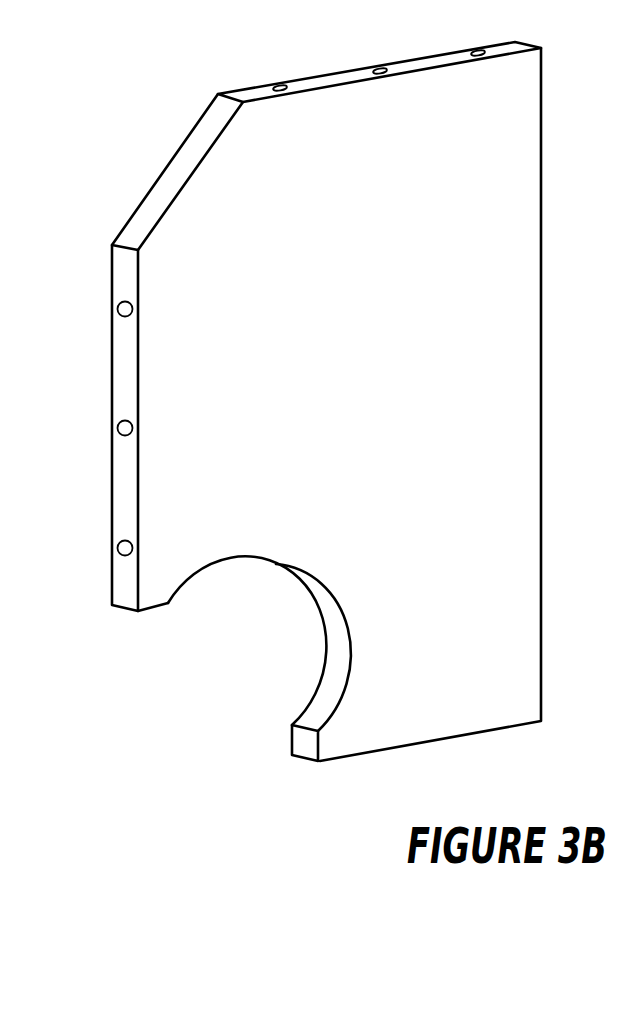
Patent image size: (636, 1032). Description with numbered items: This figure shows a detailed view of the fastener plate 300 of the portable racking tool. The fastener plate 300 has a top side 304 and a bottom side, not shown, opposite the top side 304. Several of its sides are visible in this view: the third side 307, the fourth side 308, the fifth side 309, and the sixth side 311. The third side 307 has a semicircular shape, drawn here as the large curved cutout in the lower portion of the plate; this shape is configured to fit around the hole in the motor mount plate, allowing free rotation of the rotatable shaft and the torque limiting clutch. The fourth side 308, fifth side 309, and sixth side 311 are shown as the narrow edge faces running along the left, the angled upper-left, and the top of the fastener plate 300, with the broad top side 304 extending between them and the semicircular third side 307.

The fastener plate 300 is at (164, 742).
The top side 304 is at (456, 716).
The third side 307 is at (323, 688).
The fourth side 308 is at (123, 376).
The fifth side 309 is at (173, 172).
The sixth side 311 is at (333, 78).